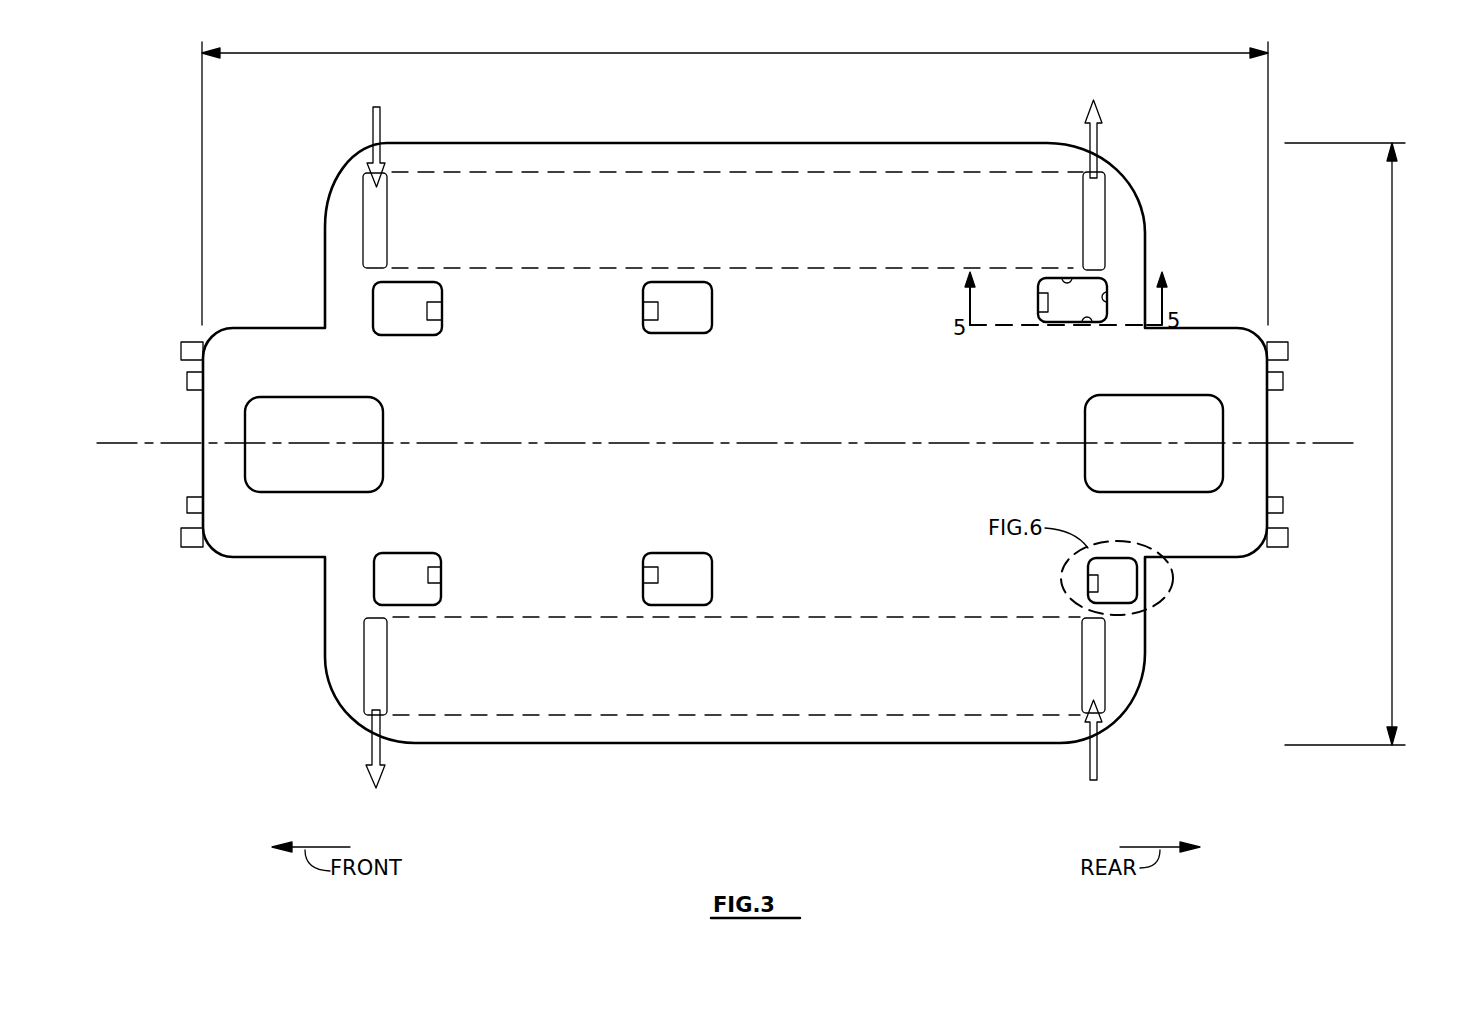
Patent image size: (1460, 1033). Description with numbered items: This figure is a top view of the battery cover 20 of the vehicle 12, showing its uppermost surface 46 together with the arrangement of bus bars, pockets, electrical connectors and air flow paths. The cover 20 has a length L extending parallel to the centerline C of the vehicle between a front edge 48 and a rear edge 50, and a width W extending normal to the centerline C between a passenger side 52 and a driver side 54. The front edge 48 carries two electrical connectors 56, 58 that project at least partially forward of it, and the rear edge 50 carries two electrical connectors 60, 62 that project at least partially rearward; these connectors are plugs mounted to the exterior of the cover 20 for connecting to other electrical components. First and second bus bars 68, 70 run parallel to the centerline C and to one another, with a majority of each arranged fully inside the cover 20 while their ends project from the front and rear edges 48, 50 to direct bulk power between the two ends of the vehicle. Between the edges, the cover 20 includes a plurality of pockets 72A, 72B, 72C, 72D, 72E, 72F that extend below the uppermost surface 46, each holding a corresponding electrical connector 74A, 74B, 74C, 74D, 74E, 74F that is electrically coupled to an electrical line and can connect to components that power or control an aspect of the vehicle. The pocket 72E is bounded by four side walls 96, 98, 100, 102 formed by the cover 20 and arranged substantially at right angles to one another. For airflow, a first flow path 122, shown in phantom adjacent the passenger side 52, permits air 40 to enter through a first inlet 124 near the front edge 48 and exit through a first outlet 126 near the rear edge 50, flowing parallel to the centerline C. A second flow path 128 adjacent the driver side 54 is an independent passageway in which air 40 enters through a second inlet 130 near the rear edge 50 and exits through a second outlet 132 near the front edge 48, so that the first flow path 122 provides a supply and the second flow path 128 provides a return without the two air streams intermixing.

The vehicle 12 is at (290, 762).
The cover 20 is at (590, 157).
The flow of air 40 is at (373, 122).
The uppermost surface 46 is at (818, 150).
The front edge 48 is at (203, 420).
The rear edge 50 is at (1267, 468).
The passenger side 52 is at (918, 143).
The driver side 54 is at (880, 748).
The electrical connector 56 is at (187, 381).
The electrical connector 58 is at (187, 505).
The electrical connector 60 is at (1283, 381).
The electrical connector 62 is at (1283, 505).
The first bus bar 68 is at (195, 342).
The second bus bar 70 is at (195, 547).
The pocket 72A is at (388, 335).
The pocket 72B is at (410, 590).
The pocket 72C is at (680, 312).
The pocket 72D is at (685, 580).
The pocket 72E is at (1070, 310).
The pocket 72F is at (1130, 595).
The electrical connector 74A is at (432, 320).
The electrical connector 74B is at (441, 575).
The electrical connector 74C is at (650, 320).
The electrical connector 74D is at (648, 577).
The electrical connector 74E is at (1040, 303).
The electrical connector 74F is at (1090, 583).
The side wall 96 is at (1040, 298).
The side wall 98 is at (1067, 282).
The side wall 100 is at (1107, 297).
The side wall 102 is at (1088, 322).
The first flow path 122 is at (653, 212).
The first inlet 124 is at (372, 222).
The first outlet 126 is at (1097, 217).
The second flow path 128 is at (770, 697).
The second inlet 130 is at (1097, 688).
The second outlet 132 is at (375, 665).
The length L is at (865, 53).
The width W is at (1362, 444).
The centerline C is at (148, 443).